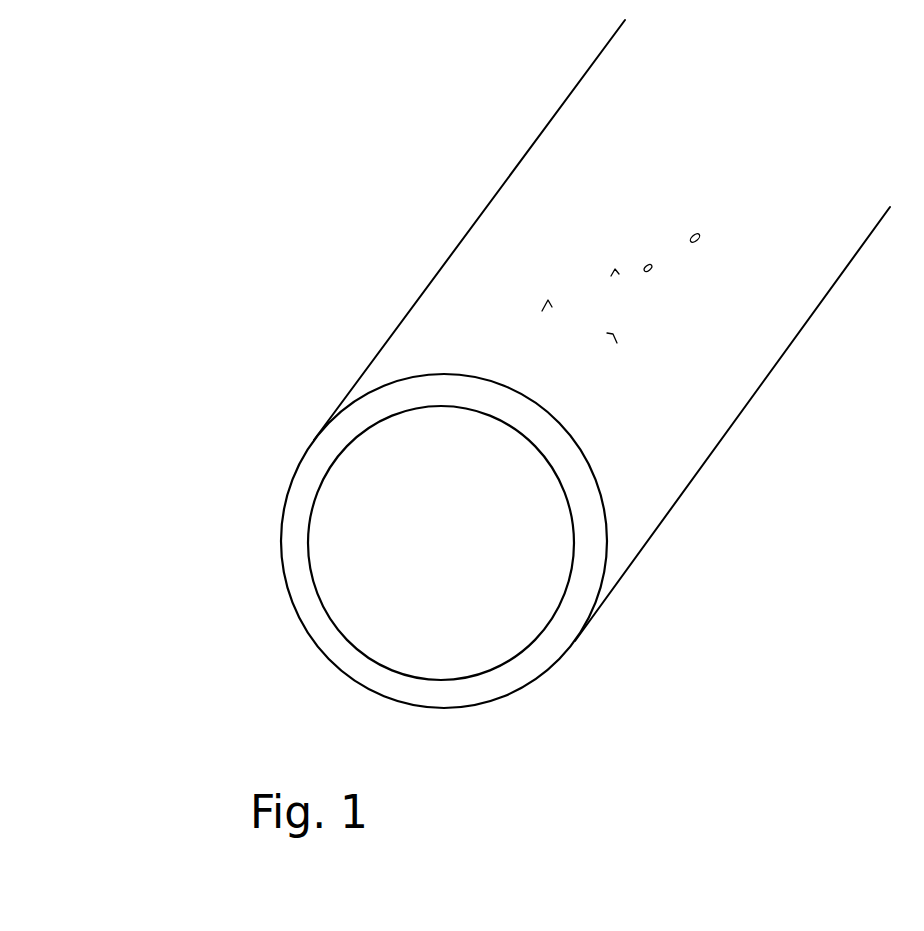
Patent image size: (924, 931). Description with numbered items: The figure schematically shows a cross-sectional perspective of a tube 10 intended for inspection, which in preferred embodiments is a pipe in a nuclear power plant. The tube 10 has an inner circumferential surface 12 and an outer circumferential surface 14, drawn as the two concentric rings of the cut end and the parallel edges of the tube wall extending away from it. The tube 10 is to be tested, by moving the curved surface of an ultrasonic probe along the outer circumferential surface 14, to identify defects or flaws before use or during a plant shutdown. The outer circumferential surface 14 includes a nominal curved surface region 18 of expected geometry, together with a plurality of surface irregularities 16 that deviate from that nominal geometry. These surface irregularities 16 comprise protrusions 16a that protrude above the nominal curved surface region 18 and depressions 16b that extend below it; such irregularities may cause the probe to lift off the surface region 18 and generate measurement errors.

The tube 10 is at (546, 364).
The inner circumferential surface 12 is at (310, 570).
The outer circumferential surface 14 is at (282, 535).
The surface irregularities 16 is at (719, 244).
The protrusions 16a is at (553, 273).
The depressions 16b is at (705, 214).
The nominal curved surface region 18 is at (646, 414).